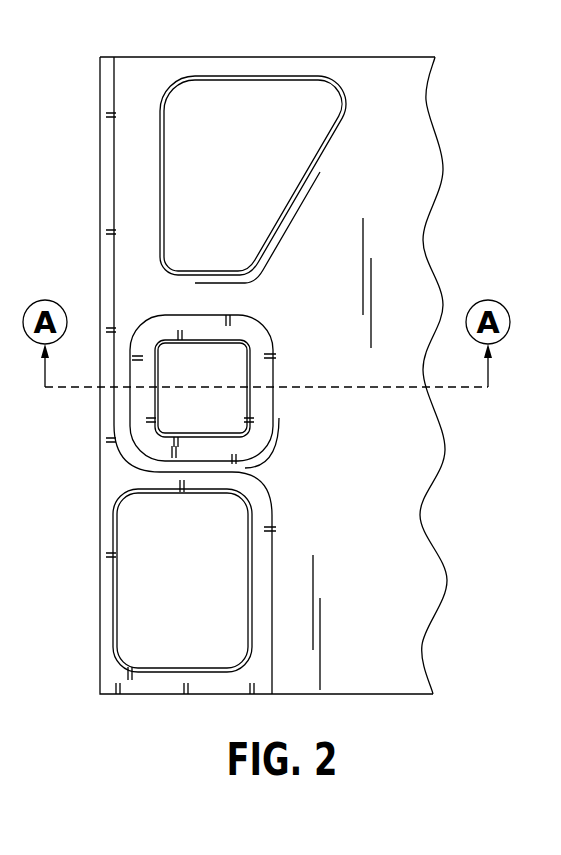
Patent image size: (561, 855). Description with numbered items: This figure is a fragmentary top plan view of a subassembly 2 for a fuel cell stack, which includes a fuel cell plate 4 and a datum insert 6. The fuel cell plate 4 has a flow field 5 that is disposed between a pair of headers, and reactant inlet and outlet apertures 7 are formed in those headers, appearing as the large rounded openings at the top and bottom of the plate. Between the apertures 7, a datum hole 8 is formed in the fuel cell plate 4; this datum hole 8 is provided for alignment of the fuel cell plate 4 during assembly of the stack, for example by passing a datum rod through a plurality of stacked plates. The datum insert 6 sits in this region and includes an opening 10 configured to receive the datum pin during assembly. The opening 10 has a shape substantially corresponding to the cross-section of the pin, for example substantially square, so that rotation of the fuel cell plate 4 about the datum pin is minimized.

The subassembly 2 is at (478, 62).
The fuel cell plate 4 is at (136, 192).
The flow field 5 is at (390, 202).
The datum insert 6 is at (213, 344).
The reactant inlet and outlet apertures 7 is at (229, 116).
The datum hole 8 is at (150, 391).
The opening 10 is at (194, 406).